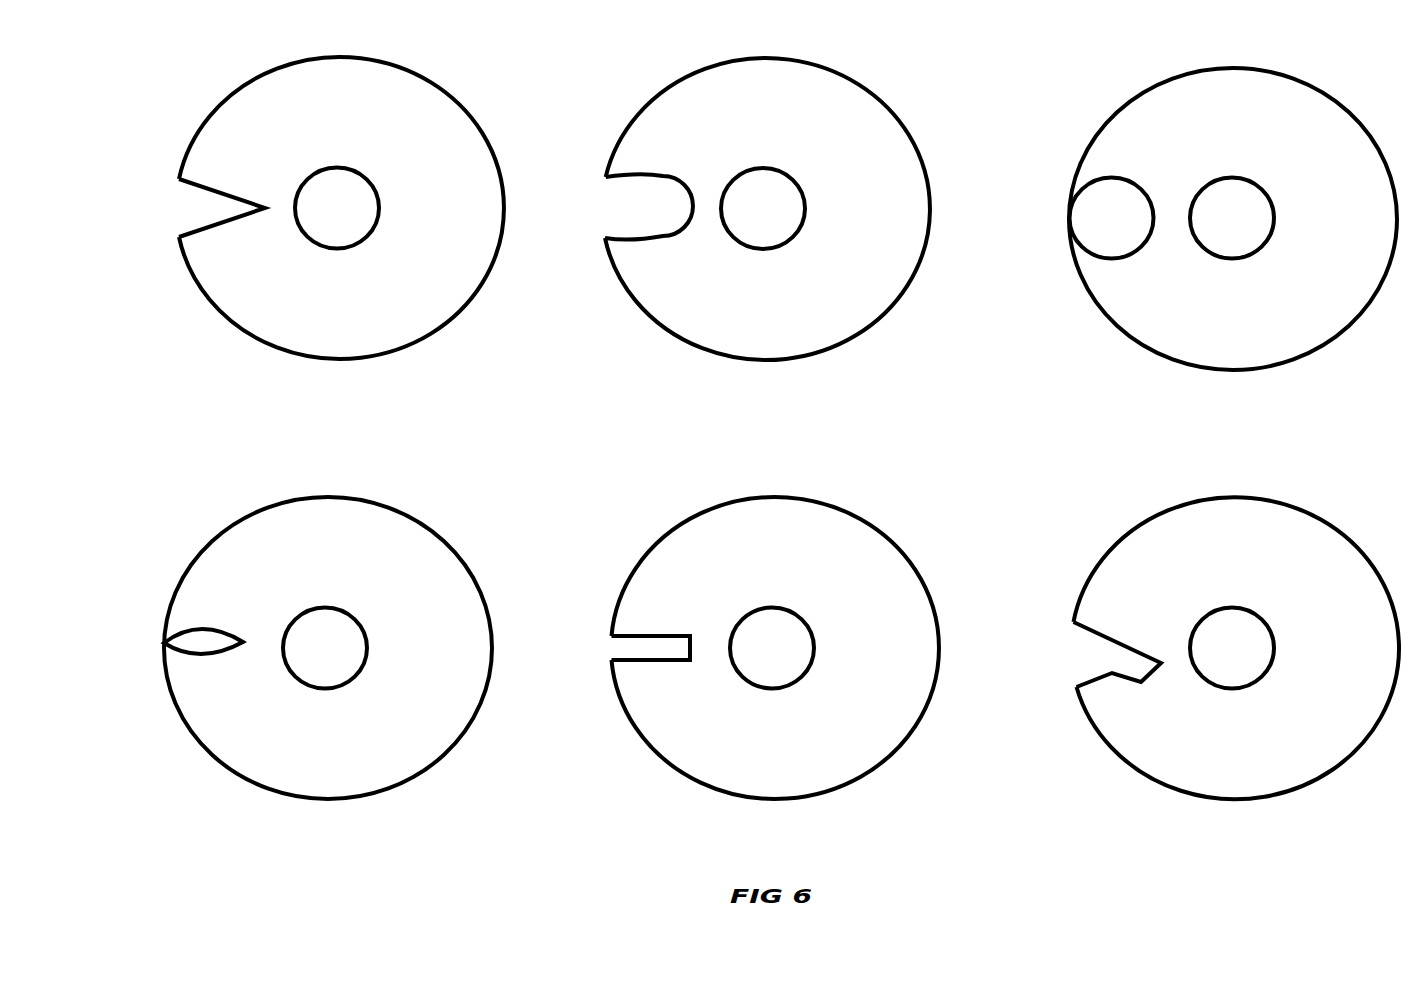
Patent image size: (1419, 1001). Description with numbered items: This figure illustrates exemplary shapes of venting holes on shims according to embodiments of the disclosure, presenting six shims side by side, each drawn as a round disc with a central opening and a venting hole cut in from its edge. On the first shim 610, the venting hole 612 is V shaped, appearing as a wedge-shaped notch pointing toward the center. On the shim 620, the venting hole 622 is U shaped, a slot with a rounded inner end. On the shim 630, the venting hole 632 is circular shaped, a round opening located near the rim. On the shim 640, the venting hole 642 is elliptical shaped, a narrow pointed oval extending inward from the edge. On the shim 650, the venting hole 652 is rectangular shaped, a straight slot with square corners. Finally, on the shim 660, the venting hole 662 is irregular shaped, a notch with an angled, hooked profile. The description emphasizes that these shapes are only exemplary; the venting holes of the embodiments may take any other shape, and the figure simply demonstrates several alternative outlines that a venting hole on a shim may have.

The shim 610 is at (355, 126).
The venting hole 612 is at (185, 208).
The shim 620 is at (783, 126).
The venting hole 622 is at (610, 208).
The shim 630 is at (1253, 132).
The venting hole 632 is at (1088, 220).
The shim 640 is at (343, 562).
The venting hole 642 is at (183, 640).
The shim 650 is at (792, 562).
The venting hole 652 is at (618, 645).
The shim 660 is at (1253, 562).
The venting hole 662 is at (1090, 648).